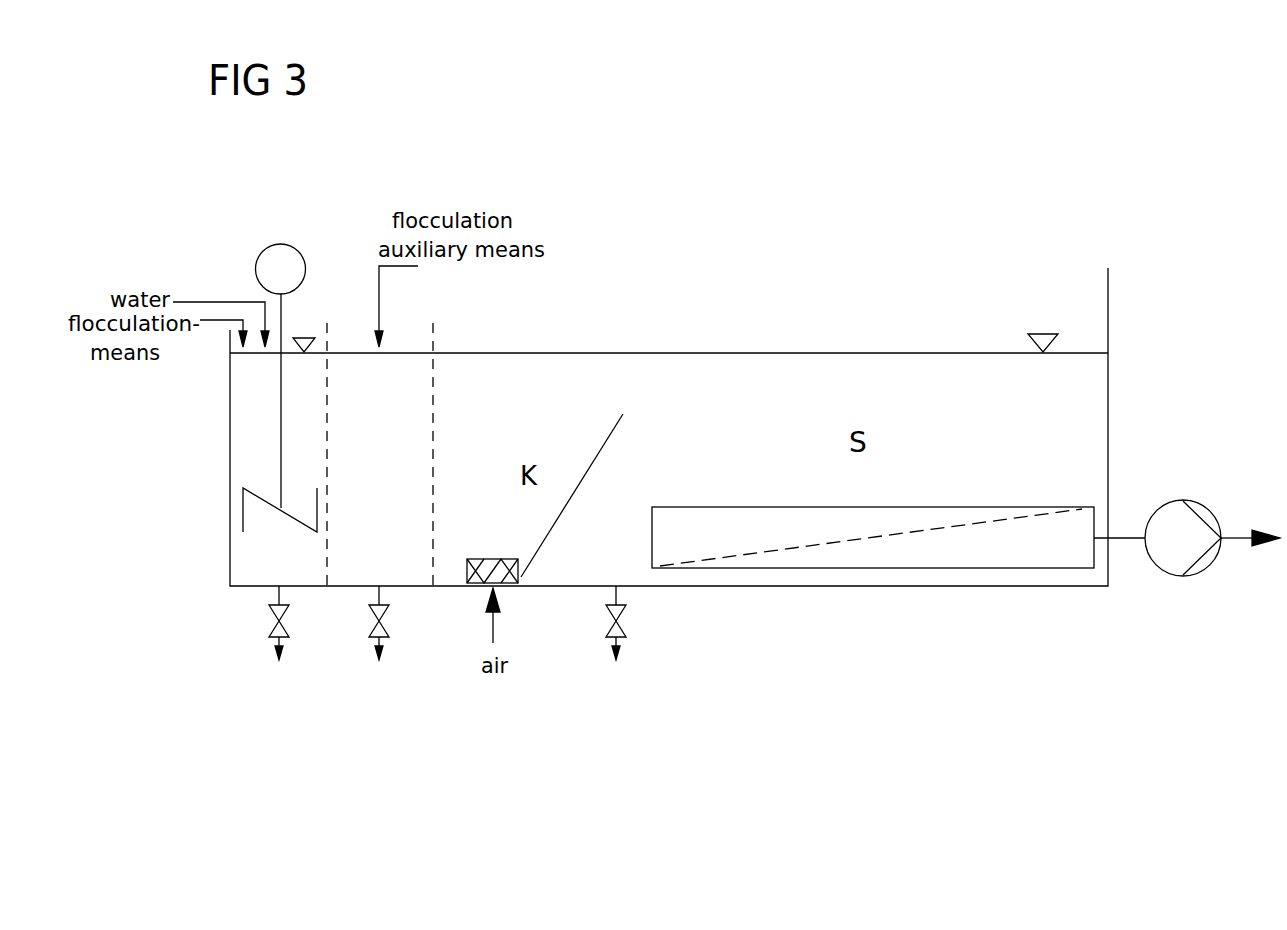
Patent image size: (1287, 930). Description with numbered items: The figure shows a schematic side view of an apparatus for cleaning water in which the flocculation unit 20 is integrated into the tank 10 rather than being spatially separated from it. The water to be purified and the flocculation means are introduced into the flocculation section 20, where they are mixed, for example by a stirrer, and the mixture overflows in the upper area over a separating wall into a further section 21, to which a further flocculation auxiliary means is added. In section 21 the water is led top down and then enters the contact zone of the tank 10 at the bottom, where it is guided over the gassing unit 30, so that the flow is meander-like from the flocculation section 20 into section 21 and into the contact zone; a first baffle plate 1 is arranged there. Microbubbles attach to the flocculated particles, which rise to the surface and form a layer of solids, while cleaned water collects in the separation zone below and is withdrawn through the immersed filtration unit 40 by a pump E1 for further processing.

The first baffle plate 1 is at (590, 467).
The tank 10 is at (1110, 307).
The flocculation unit 20 is at (256, 555).
The section of tank for adding further flocculation auxiliary means 21 is at (401, 572).
The gassing unit 30 is at (477, 588).
The filtration unit 40 is at (1068, 558).
The pump E1 is at (1187, 560).